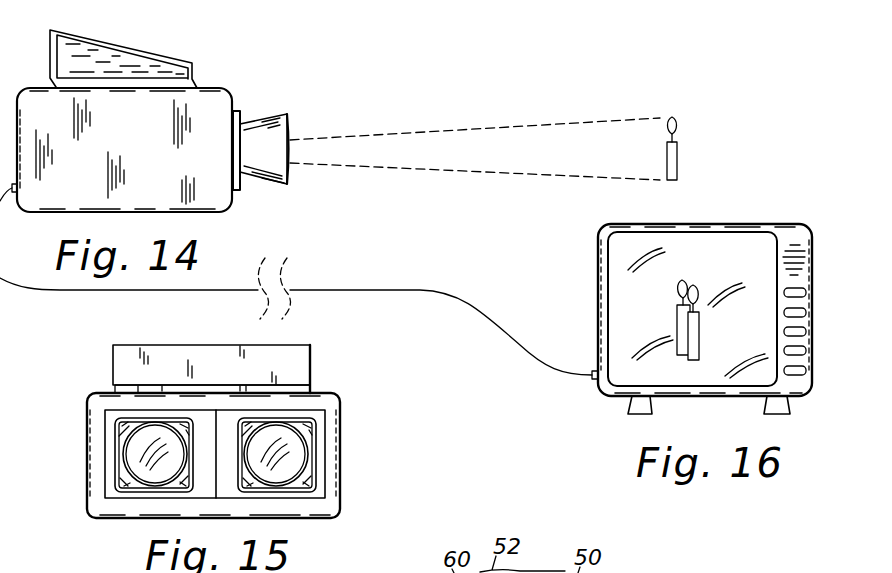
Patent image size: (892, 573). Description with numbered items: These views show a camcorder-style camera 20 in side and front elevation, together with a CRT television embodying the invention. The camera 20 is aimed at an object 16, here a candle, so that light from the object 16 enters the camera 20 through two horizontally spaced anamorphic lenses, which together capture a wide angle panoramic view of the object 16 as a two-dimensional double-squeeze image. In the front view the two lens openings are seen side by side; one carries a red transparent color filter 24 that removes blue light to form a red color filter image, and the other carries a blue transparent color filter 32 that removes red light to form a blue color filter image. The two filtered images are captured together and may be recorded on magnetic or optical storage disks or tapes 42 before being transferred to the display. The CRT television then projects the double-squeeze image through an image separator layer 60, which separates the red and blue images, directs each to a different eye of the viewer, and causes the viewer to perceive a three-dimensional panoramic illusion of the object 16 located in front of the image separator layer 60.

In FIG. 14, the camera 20 is at (264, 70).
In FIG. 15, the camera 20 is at (312, 370).
In FIG. 14, the tapes 42 is at (162, 56).
In FIG. 14, the object 16 is at (679, 157).
In FIG. 15, the red transparent color filter 24 is at (126, 454).
In FIG. 15, the blue transparent color filter 32 is at (304, 455).
In FIG. 16, the image separator layer 60 is at (740, 270).